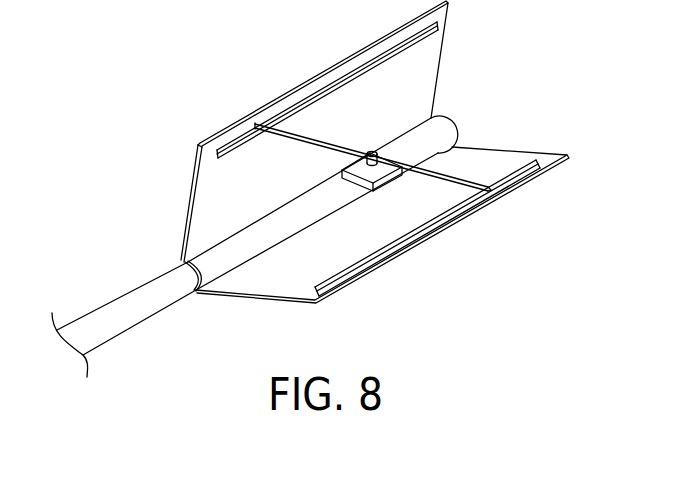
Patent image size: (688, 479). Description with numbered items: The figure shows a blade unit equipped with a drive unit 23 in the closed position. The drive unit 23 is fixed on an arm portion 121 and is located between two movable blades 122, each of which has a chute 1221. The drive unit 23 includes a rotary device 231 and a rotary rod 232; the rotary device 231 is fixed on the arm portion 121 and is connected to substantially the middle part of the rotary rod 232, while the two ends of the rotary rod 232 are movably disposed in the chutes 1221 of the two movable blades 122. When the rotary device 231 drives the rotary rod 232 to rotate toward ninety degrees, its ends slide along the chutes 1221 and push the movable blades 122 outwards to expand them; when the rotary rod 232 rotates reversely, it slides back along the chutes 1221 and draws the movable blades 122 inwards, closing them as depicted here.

The arm portion 121 is at (128, 308).
The movable blade 122 is at (445, 67).
The chute 1221 is at (288, 107).
The drive unit 23 is at (411, 223).
The rotary device 231 is at (373, 182).
The rotary rod 232 is at (478, 182).